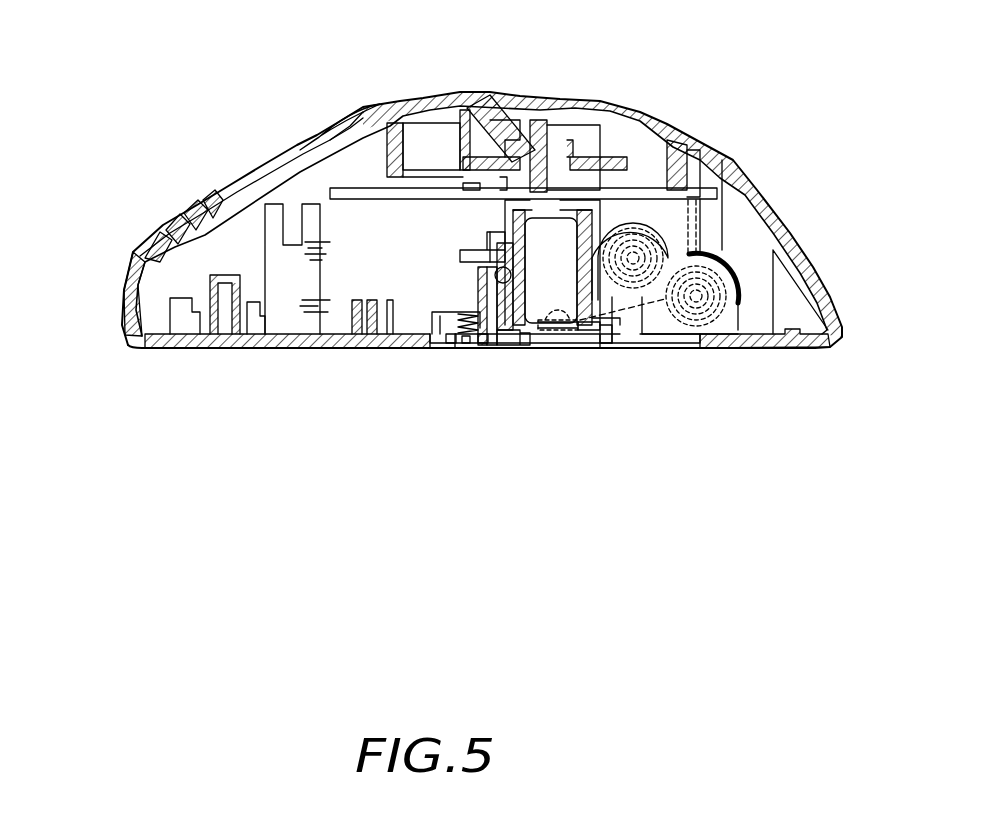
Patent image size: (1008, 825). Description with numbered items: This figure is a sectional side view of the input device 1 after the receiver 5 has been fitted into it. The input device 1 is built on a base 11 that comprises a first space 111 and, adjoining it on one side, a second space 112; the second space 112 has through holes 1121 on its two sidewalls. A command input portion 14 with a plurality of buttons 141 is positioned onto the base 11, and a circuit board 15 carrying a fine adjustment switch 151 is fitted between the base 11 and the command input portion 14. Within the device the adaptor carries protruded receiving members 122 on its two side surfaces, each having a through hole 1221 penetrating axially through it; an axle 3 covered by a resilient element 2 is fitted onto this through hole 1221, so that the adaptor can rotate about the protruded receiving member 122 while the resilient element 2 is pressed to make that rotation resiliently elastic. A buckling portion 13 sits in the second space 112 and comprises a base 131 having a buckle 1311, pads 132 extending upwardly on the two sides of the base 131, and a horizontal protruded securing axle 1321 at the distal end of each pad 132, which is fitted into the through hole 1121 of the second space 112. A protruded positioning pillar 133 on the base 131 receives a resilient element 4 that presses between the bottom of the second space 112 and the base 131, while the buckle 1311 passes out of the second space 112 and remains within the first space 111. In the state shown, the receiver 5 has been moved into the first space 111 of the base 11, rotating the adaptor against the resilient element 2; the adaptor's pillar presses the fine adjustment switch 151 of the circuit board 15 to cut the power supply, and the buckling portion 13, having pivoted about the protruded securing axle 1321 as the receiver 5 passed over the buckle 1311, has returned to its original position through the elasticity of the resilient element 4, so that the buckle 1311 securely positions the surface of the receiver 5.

The input device 1 is at (868, 316).
The base 11 is at (805, 349).
The first space 111 is at (540, 212).
The second space 112 is at (476, 259).
The through hole 1121 is at (501, 266).
The protruded receiving member 122 is at (696, 296).
The through hole 1221 is at (566, 342).
The buckling portion 13 is at (493, 360).
The base 131 is at (445, 345).
The buckle 1311 is at (525, 346).
The pad 132 is at (494, 299).
The protruded securing axle 1321 is at (476, 273).
The protruded positioning pillar 133 is at (450, 345).
The command input portion 14 is at (135, 293).
The button 141 is at (247, 183).
The circuit board 15 is at (650, 186).
The fine adjustment switch 151 is at (487, 232).
The resilient element 2 is at (560, 332).
The axle 3 is at (608, 336).
The resilient element 4 is at (455, 322).
The receiver 5 is at (600, 243).